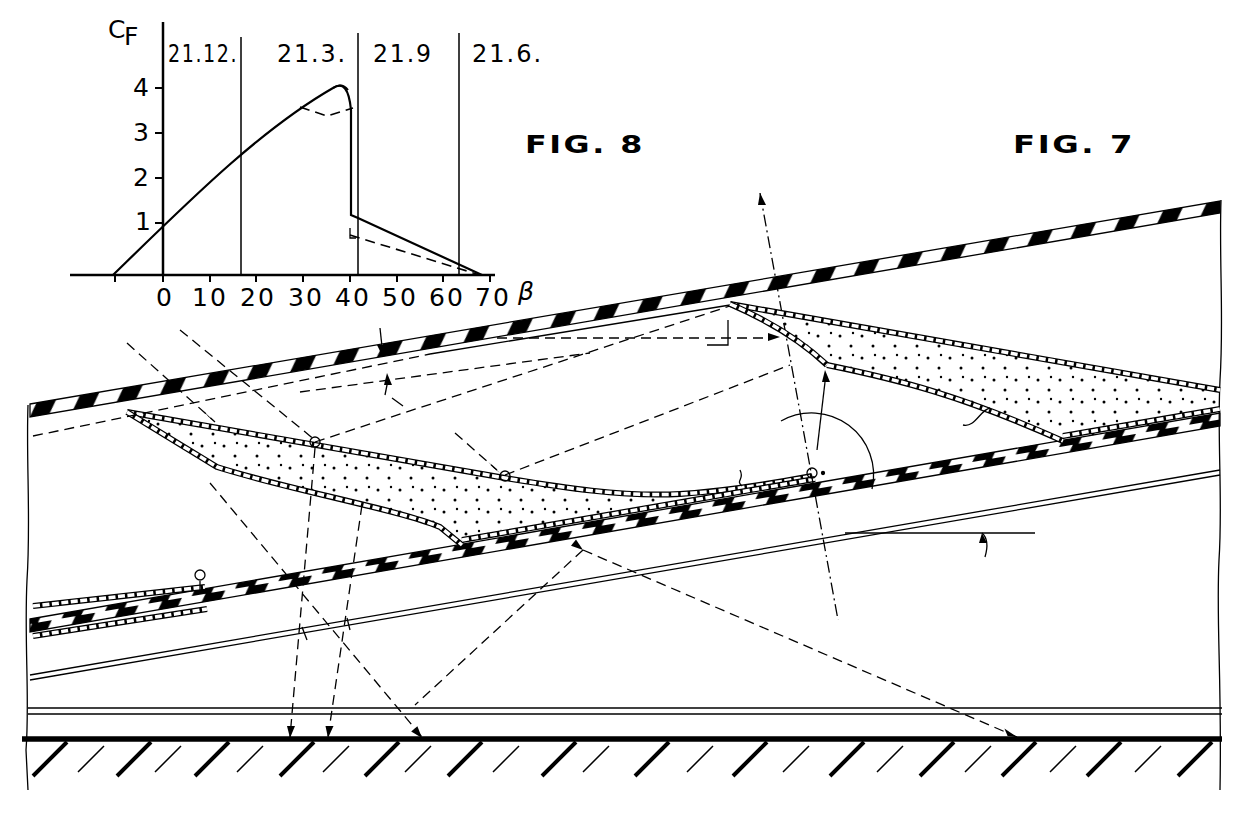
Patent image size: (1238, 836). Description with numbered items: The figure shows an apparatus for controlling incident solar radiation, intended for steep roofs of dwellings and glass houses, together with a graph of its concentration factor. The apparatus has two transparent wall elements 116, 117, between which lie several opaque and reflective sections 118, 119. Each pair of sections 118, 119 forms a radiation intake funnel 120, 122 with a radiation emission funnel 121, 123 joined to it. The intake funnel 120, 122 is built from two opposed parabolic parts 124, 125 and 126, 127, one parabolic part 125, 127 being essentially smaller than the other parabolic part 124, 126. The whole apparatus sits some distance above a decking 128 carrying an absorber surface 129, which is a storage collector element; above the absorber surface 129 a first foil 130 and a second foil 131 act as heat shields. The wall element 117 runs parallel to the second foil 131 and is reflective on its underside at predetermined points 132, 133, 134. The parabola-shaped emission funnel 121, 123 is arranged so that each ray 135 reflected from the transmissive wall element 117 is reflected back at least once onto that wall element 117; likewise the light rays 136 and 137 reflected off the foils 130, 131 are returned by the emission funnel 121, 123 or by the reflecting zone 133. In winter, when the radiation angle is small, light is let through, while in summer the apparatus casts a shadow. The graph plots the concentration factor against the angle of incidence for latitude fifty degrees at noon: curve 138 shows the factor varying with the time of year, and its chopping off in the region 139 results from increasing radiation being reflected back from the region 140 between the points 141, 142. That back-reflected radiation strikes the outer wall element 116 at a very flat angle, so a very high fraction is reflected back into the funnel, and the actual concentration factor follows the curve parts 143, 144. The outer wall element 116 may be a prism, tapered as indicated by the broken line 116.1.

In FIG. 7, the transparent wall element 116 is at (928, 251).
In FIG. 7, the broken line 116.1 is at (667, 350).
In FIG. 7, the transparent wall element 117 is at (963, 474).
In FIG. 7, the opaque reflective section 118 is at (905, 328).
In FIG. 7, the opaque reflective section 119 is at (180, 483).
In FIG. 7, the radiation intake funnel 120 is at (519, 443).
In FIG. 7, the radiation emission funnel 121 is at (920, 388).
In FIG. 7, the radiation intake funnel 122 is at (119, 570).
In FIG. 7, the radiation emission funnel 123 is at (287, 481).
In FIG. 7, the parabolic part 124 is at (160, 584).
In FIG. 7, the parabolic part 125 is at (189, 453).
In FIG. 7, the parabolic part 126 is at (631, 492).
In FIG. 7, the parabolic part 127 is at (818, 372).
In FIG. 7, the decking 128 is at (600, 753).
In FIG. 7, the absorber surface 129 is at (540, 735).
In FIG. 7, the first foil 130 is at (480, 708).
In FIG. 7, the second foil 131 is at (635, 571).
In FIG. 7, the reflective point 132 is at (1096, 446).
In FIG. 7, the reflecting zone 133 is at (690, 514).
In FIG. 7, the reflective point 134 is at (120, 631).
In FIG. 7, the ray 135 is at (284, 593).
In FIG. 7, the light ray 136 is at (360, 540).
In FIG. 7, the light ray 137 is at (486, 627).
In FIG. 8, the curve 138 is at (238, 153).
In FIG. 8, the region of curve 139 is at (358, 137).
In FIG. 7, the region 140 is at (280, 437).
In FIG. 7, the point 141 is at (127, 410).
In FIG. 7, the point 142 is at (328, 440).
In FIG. 8, the curve part 143 is at (352, 100).
In FIG. 8, the curve part 144 is at (387, 232).